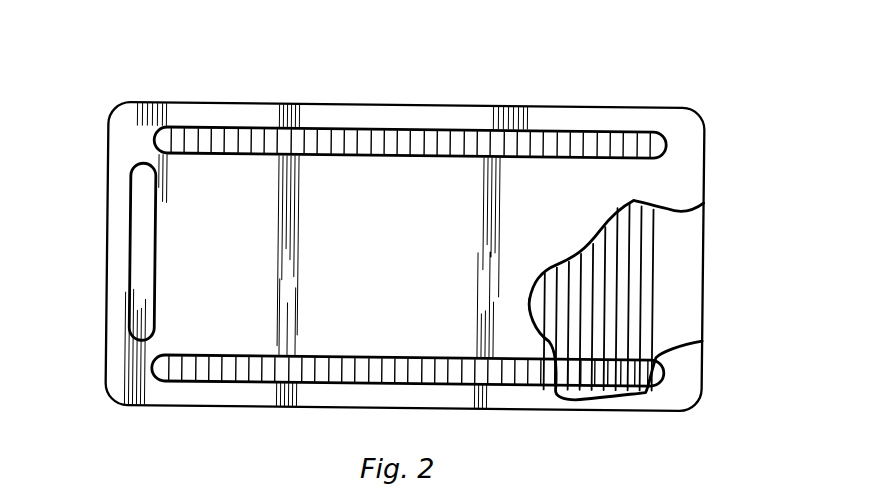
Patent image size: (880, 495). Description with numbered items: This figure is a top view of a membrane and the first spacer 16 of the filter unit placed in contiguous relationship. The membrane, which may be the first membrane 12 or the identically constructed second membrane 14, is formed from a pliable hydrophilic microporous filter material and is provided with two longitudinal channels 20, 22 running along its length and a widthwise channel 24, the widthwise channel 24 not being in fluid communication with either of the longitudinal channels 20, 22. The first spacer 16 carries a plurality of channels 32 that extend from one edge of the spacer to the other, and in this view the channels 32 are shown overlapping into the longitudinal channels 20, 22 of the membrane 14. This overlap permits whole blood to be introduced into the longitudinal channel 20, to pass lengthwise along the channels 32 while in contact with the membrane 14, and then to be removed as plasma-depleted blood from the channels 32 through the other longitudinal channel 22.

The first membrane 12 is at (680, 173).
The second membrane 14 is at (647, 338).
The first spacer 16 is at (685, 243).
The longitudinal channel 20 is at (575, 378).
The longitudinal channel 22 is at (250, 136).
The widthwise channel 24 is at (135, 265).
The channels 32 is at (600, 289).